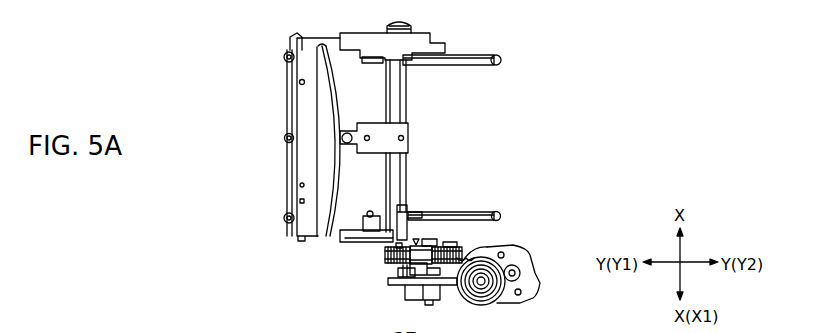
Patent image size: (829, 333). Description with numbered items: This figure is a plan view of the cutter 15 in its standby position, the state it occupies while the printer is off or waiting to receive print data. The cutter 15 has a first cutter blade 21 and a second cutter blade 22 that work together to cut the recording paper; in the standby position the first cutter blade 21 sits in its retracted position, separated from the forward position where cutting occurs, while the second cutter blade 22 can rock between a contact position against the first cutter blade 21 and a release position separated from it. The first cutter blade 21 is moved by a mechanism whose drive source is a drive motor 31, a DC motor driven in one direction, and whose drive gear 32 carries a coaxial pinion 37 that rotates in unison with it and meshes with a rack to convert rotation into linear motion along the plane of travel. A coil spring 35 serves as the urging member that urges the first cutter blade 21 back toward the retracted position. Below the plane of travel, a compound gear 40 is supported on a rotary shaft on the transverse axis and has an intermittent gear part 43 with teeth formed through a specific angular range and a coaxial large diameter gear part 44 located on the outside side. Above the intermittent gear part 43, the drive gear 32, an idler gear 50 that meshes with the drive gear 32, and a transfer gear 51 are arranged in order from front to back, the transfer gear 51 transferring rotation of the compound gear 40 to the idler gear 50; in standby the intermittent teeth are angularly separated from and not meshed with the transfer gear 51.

The cutter 15 is at (551, 66).
The first cutter blade 21 is at (366, 83).
The second cutter blade 22 is at (296, 100).
The drive motor 31 is at (533, 288).
The drive gear 32 is at (392, 259).
The coil spring 35 is at (476, 62).
The pinion 37 is at (412, 252).
The compound gear 40 is at (398, 290).
The intermittent gear part 43 is at (404, 276).
The large diameter gear part 44 is at (453, 283).
The idler gear 50 is at (442, 252).
The transfer gear 51 is at (478, 256).